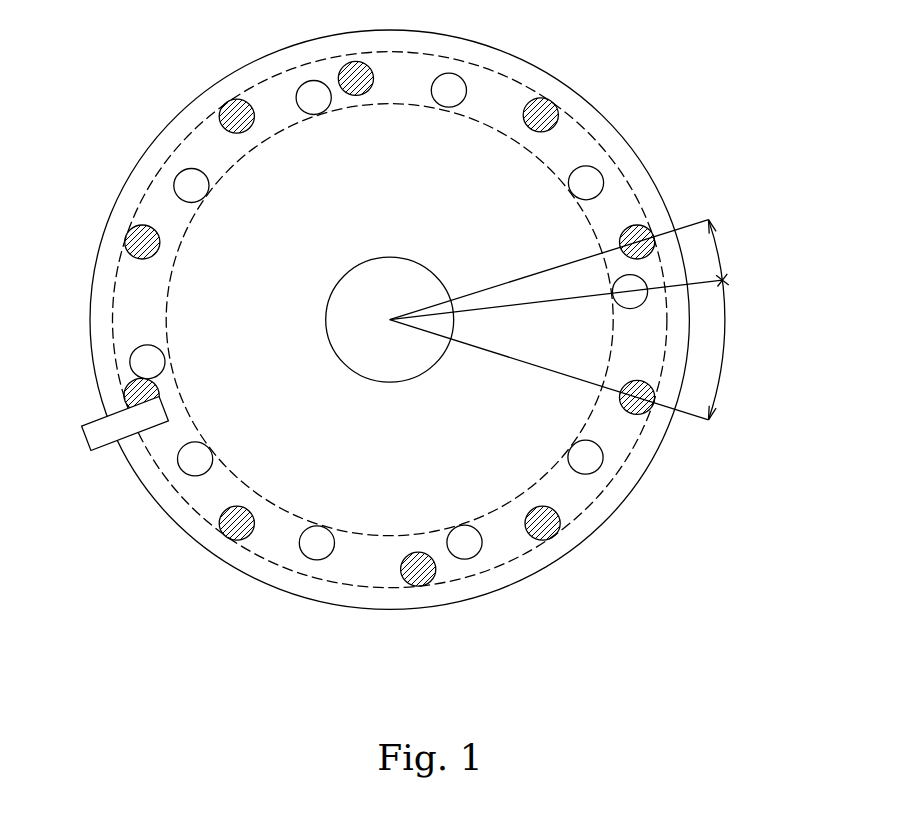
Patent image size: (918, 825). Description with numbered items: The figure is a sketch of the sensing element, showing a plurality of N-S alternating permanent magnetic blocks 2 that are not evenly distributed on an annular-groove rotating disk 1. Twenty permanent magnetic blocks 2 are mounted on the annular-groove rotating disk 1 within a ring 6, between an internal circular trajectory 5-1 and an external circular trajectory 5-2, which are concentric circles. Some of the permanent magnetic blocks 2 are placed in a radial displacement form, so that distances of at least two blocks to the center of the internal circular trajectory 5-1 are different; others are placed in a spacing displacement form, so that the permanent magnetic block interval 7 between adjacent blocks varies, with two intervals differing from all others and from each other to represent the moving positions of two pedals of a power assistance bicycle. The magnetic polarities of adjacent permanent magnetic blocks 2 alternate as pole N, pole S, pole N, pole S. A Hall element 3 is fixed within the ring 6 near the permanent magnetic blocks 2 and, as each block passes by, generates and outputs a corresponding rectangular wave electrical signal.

The annular-groove rotating disk 1 is at (605, 120).
The permanent magnetic blocks 2 is at (217, 119).
The Hall element 3 is at (105, 432).
The internal circular trajectory 5-1 is at (552, 472).
The external circular trajectory 5-2 is at (512, 560).
The ring 6 is at (615, 430).
The permanent magnetic block interval 7 is at (720, 252).